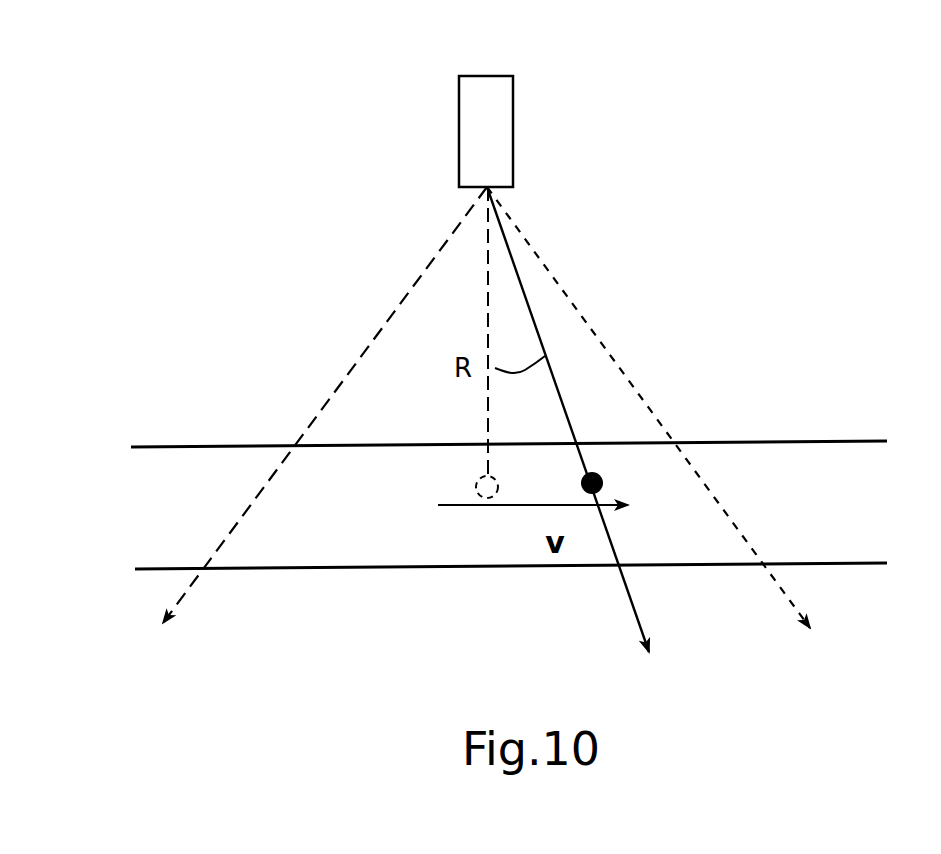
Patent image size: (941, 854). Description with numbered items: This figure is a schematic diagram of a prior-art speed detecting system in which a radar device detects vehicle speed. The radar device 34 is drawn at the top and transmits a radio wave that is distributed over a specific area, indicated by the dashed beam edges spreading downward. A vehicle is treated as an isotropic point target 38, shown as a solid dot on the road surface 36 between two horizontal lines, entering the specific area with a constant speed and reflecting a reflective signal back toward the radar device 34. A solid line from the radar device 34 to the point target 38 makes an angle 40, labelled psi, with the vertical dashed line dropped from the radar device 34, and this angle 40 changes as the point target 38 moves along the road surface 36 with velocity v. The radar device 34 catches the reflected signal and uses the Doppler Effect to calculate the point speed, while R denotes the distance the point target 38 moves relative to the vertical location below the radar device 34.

The radar device 34 is at (513, 130).
The road surface line 36 is at (237, 447).
The isotropic point target 38 is at (603, 478).
The angle 40 is at (545, 401).